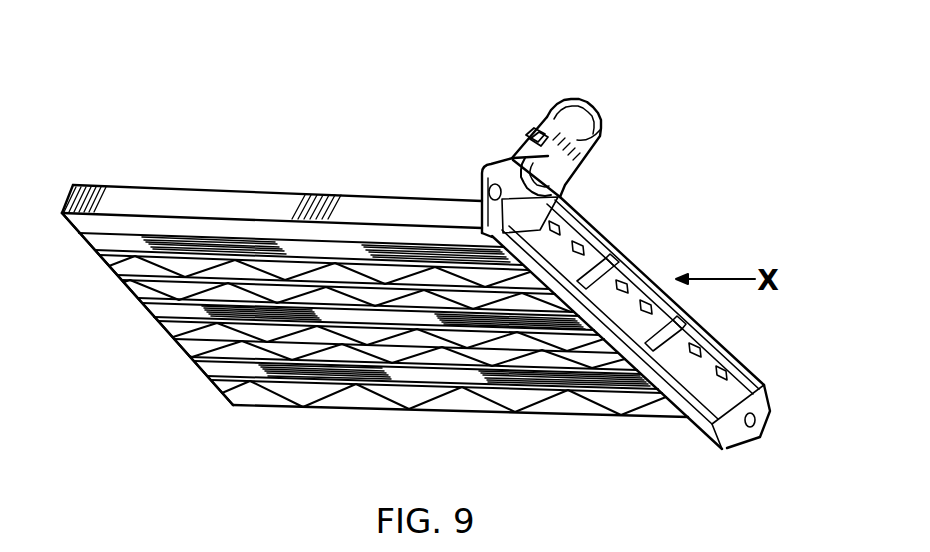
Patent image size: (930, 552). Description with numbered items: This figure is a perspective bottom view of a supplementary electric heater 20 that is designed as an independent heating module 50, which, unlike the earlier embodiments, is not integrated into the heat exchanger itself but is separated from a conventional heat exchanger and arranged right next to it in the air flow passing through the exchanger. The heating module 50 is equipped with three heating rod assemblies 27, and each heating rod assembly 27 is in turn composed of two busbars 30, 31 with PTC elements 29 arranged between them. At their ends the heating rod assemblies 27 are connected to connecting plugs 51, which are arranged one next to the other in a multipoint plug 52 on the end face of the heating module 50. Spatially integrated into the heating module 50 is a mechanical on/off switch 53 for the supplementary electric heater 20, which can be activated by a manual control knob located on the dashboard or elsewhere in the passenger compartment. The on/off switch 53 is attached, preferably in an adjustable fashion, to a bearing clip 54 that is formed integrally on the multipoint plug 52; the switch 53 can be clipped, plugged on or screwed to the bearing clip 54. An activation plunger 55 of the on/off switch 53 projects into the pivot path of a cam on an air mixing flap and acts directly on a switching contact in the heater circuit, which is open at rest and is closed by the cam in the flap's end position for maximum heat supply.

The supplementary electric heater 20 is at (177, 186).
The heating module 50 is at (284, 188).
The busbar 31 is at (136, 286).
The heating rod assembly 27 is at (137, 311).
The busbar 30 is at (176, 338).
The PTC element 29 is at (222, 318).
The connecting plug 51 is at (572, 238).
The multipoint plug 52 is at (731, 427).
The on/off switch 53 is at (604, 124).
The bearing clip 54 is at (505, 165).
The activation plunger 55 is at (539, 127).